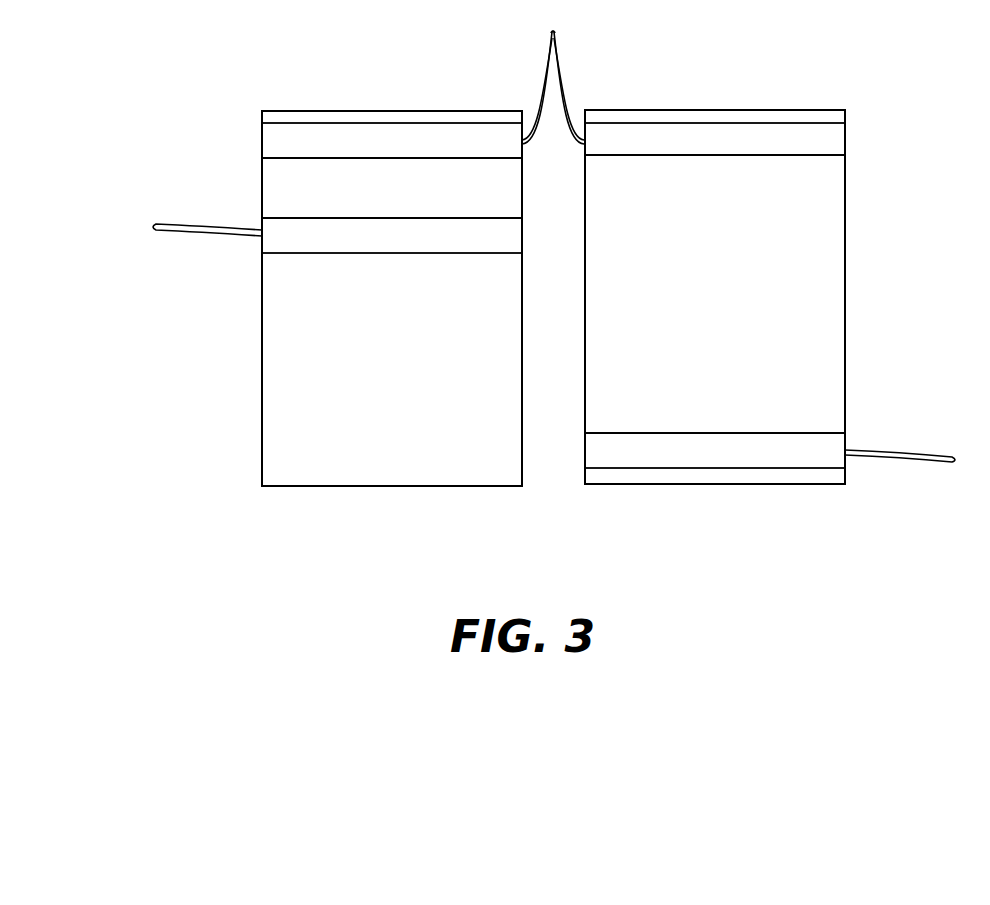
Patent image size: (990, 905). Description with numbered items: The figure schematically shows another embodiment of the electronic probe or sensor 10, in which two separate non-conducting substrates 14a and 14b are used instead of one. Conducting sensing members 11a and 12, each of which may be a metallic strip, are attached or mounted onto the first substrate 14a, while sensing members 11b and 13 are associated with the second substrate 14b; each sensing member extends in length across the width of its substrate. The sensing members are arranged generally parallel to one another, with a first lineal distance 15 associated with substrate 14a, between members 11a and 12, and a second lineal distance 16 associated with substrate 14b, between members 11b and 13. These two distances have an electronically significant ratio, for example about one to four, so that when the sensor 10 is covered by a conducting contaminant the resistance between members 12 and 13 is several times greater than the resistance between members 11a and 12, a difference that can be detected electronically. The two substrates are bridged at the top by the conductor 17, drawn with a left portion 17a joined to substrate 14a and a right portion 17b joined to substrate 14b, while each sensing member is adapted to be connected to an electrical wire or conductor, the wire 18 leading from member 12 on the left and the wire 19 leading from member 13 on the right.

The sensor 10 is at (554, 277).
The sensing member 11a is at (283, 146).
The sensing member 11b is at (825, 143).
The sensing member 12 is at (284, 242).
The sensing member 13 is at (830, 448).
The substrate 14a is at (359, 298).
The substrate 14b is at (722, 295).
The first lineal distance 15 is at (273, 190).
The second lineal distance 16 is at (607, 292).
The electrical wire or conductor 17 is at (548, 78).
The first fold portion 17a is at (543, 97).
The second fold portion 17b is at (562, 97).
The electrical wire or conductor 18 is at (206, 228).
The electrical wire or conductor 19 is at (888, 460).